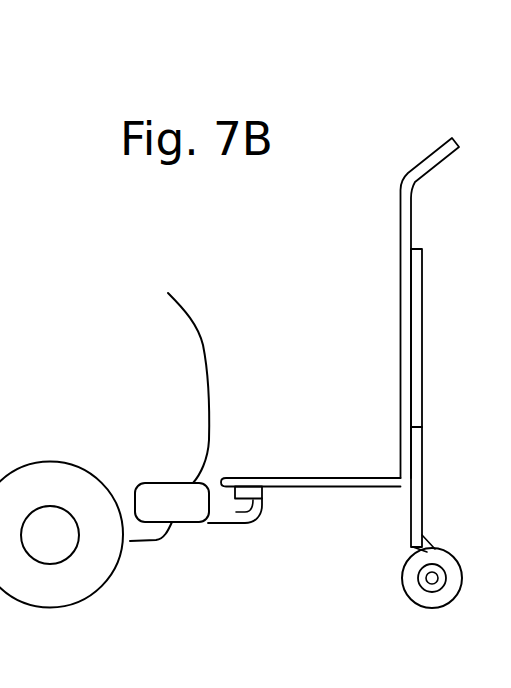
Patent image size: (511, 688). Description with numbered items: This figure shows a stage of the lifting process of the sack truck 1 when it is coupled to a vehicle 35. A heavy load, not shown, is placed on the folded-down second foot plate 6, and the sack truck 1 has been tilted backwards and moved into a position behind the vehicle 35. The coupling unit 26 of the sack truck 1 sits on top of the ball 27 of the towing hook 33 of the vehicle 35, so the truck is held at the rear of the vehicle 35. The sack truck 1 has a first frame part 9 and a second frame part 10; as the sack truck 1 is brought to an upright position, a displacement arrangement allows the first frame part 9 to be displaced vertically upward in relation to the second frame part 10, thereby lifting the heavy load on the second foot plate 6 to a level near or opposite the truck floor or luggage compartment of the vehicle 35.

The sack truck 1 is at (371, 140).
The second foot plate 6 is at (318, 478).
The first frame part 9 is at (405, 336).
The second frame part 10 is at (413, 490).
The coupling unit 26 is at (246, 492).
The ball 27 is at (238, 509).
The towing hook 33 is at (210, 521).
The vehicle 35 is at (198, 331).